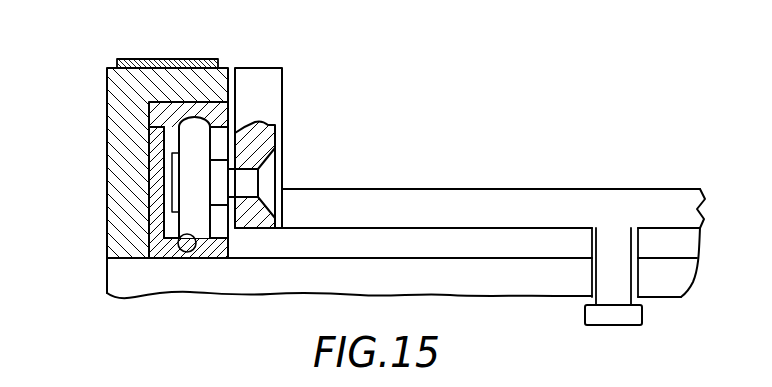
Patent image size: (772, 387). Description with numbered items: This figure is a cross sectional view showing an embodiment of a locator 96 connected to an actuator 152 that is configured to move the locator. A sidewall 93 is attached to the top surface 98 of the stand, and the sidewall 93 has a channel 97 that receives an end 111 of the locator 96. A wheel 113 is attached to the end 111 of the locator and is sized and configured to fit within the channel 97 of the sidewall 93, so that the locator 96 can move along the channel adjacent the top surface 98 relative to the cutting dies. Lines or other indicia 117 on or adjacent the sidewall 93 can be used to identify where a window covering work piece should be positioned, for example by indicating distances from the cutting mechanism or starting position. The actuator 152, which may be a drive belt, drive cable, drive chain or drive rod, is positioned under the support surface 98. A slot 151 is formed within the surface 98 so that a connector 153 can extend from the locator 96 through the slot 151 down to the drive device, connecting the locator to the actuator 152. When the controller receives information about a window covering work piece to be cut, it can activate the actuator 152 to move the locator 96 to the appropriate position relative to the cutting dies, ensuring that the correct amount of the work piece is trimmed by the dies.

The sidewall 93 is at (101, 94).
The indicia 117 is at (142, 58).
The end of the locator 111 is at (258, 75).
The wheel 113 is at (186, 143).
The channel 97 is at (176, 245).
The top surface 98 is at (354, 228).
The locator 96 is at (485, 188).
The slot 151 is at (633, 240).
The connector 153 is at (623, 272).
The actuator 152 is at (595, 327).